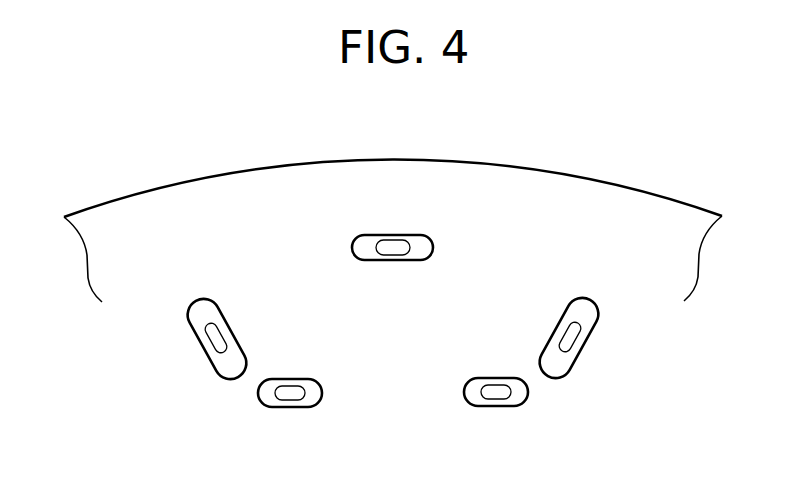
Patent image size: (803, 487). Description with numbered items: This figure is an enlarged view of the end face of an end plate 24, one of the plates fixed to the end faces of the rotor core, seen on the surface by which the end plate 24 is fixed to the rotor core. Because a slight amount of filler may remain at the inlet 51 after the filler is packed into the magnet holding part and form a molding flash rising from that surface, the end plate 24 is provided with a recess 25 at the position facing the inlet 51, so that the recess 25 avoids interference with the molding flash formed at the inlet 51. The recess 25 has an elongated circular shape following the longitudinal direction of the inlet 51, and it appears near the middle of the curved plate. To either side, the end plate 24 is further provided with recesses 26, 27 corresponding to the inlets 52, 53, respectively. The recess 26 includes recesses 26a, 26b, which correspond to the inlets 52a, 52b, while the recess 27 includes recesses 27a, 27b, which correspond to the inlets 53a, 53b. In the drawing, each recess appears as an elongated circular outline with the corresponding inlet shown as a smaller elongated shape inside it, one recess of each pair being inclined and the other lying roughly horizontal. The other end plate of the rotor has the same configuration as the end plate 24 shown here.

The end plate 24 is at (595, 200).
The recess 25 is at (420, 246).
The inlet 51 is at (392, 243).
The recess 26 is at (636, 390).
The recess 26a is at (553, 365).
The recess 26b is at (517, 398).
The recess 27 is at (148, 390).
The recess 27a is at (228, 366).
The recess 27b is at (260, 398).
The inlet 52 is at (435, 295).
The inlet 52a is at (562, 330).
The inlet 52b is at (504, 385).
The inlet 53 is at (346, 292).
The inlet 53a is at (229, 333).
The inlet 53b is at (290, 387).